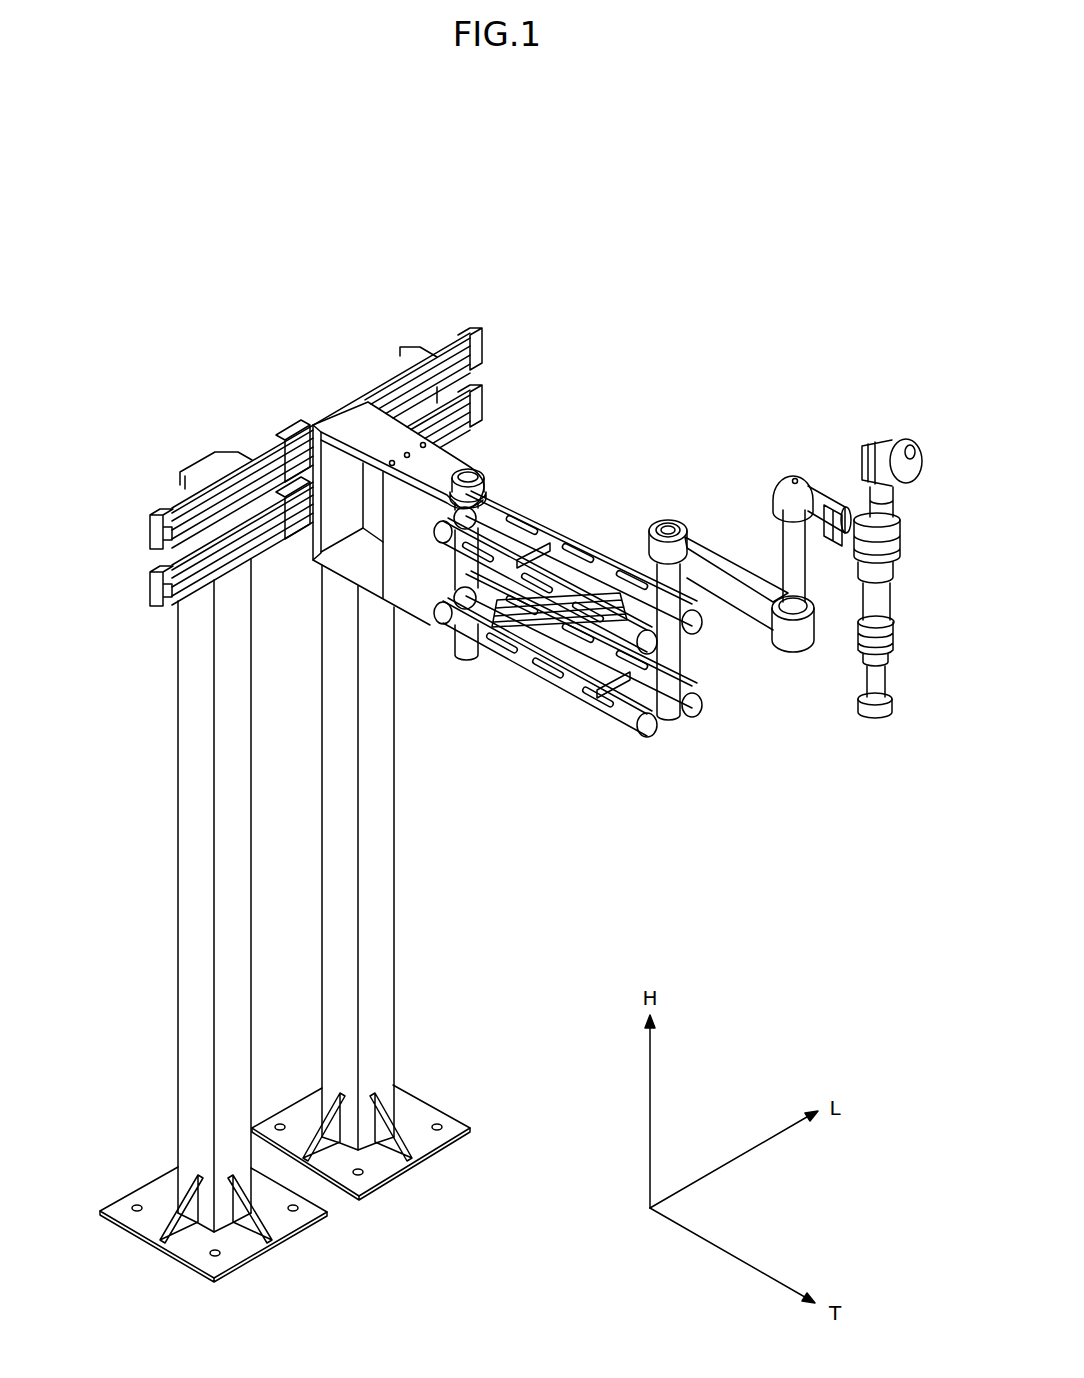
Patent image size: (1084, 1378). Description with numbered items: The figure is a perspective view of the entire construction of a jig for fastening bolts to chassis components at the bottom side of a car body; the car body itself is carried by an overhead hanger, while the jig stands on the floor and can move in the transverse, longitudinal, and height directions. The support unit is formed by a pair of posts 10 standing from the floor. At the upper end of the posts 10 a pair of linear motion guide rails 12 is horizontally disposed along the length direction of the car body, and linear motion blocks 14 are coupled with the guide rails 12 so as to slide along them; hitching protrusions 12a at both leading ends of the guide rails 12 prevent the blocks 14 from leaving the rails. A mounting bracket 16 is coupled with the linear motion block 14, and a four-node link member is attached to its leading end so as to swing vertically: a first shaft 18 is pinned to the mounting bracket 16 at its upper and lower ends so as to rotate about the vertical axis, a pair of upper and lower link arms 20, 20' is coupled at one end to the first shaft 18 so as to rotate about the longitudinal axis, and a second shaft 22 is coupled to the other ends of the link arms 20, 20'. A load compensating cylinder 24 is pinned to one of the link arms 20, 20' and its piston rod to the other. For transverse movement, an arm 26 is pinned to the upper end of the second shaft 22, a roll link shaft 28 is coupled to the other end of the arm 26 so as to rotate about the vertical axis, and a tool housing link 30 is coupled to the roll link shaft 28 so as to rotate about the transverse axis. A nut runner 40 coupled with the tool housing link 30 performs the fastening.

The posts 10 is at (338, 870).
The linear motion guide rails 12 is at (271, 476).
The hitching protrusions 12a is at (162, 570).
The linear motion blocks 14 is at (303, 500).
The mounting bracket 16 is at (350, 428).
The first shaft 18 is at (463, 573).
The upper link arm 20 is at (568, 572).
The lower link arm 20' is at (568, 682).
The second shaft 22 is at (683, 673).
The cylinder 24 is at (563, 640).
The arm 26 is at (737, 553).
The roll link shaft 28 is at (792, 563).
The tool housing link 30 is at (830, 494).
The nut runner 40 is at (878, 597).